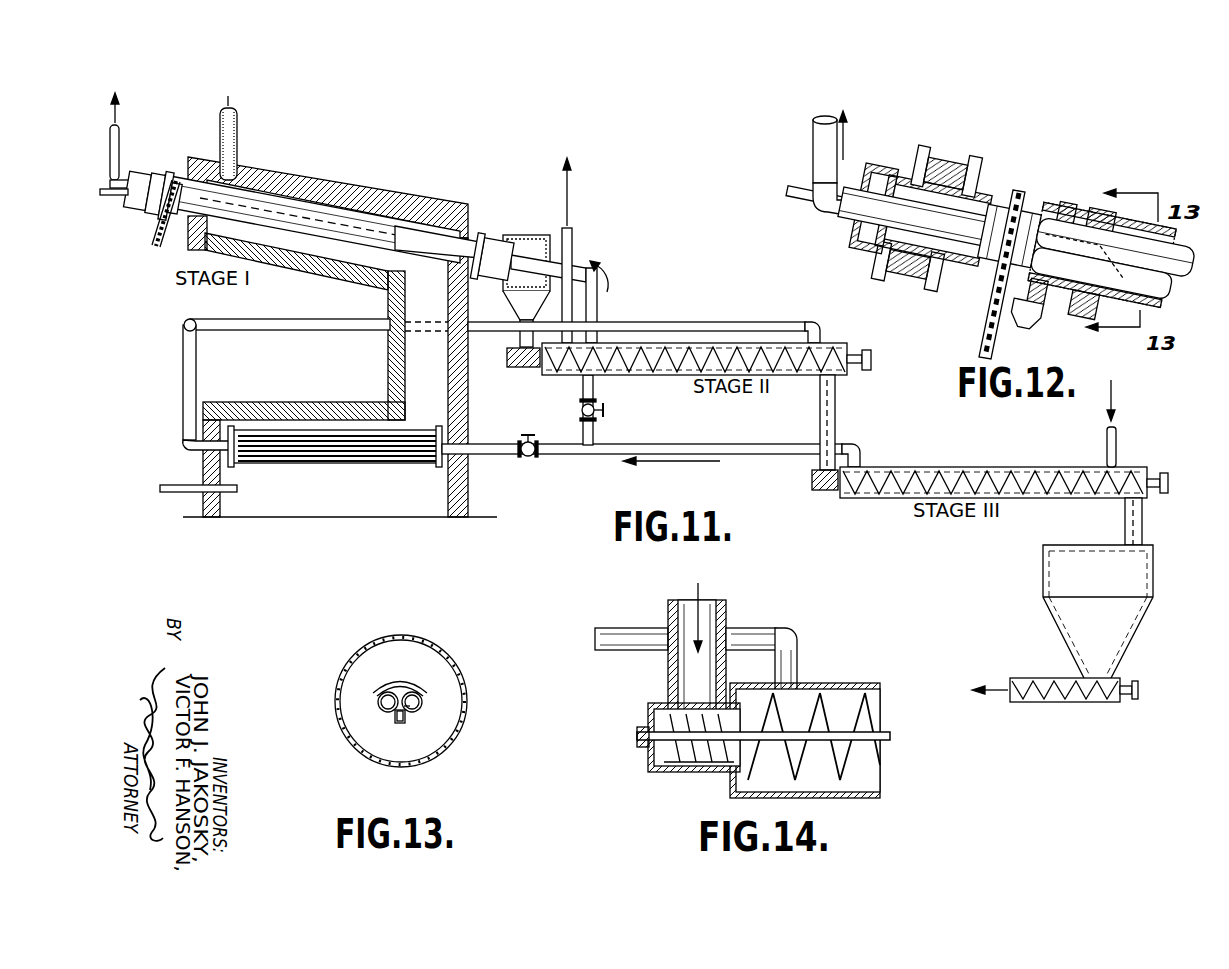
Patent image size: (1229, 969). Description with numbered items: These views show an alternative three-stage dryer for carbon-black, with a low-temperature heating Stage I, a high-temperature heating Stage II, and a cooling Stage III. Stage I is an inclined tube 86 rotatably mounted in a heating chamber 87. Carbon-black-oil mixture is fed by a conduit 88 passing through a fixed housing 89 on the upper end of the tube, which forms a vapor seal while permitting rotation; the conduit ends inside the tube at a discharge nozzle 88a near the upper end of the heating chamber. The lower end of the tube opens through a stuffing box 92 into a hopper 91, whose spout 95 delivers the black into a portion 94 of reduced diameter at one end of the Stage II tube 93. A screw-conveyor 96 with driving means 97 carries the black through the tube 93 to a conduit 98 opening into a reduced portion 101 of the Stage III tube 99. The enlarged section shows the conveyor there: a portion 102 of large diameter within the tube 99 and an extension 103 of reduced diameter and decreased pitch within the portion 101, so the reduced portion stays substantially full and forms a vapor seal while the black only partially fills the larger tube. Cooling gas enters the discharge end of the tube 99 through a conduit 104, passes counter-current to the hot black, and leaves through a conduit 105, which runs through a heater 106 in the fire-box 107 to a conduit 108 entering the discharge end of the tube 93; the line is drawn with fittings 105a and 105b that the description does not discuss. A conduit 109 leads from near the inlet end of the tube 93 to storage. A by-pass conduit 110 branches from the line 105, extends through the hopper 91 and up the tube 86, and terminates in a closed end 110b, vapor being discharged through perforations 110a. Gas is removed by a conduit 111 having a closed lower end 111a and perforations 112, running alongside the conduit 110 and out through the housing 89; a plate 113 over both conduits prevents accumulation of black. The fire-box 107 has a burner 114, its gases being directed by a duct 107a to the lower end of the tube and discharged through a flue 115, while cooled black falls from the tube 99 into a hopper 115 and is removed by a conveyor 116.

In FIG. 11, the inclined tube 86 is at (355, 212).
In FIG. 12, the inclined tube 86 is at (980, 265).
In FIG. 13, the inclined tube 86 is at (455, 665).
In FIG. 11, the heating chamber 87 is at (328, 337).
In FIG. 11, the conduit 88 is at (106, 198).
In FIG. 12, the conduit 88 is at (796, 212).
In FIG. 11, the CBOM discharge nozzle 88a is at (218, 220).
In FIG. 12, the CBOM discharge nozzle 88a is at (1110, 290).
In FIG. 13, the CBOM discharge nozzle 88a is at (395, 724).
In FIG. 11, the fixed housing 89 is at (142, 176).
In FIG. 12, the fixed housing 89 is at (893, 170).
In FIG. 11, the hopper 91 is at (514, 235).
In FIG. 11, the stuffing box 92 is at (488, 286).
In FIG. 11, the tube 93 is at (680, 343).
In FIG. 11, the portion of reduced diameter 94 is at (530, 368).
In FIG. 11, the spout 95 is at (520, 338).
In FIG. 11, the screw-conveyor 96 is at (655, 377).
In FIG. 11, the driving means 97 is at (871, 354).
In FIG. 11, the conduit 98 is at (838, 425).
In FIG. 14, the conduit 98 is at (668, 677).
In FIG. 11, the tube 99 is at (948, 467).
In FIG. 14, the tube 99 is at (878, 700).
In FIG. 11, the reduced portion 101 is at (818, 492).
In FIG. 14, the reduced portion 101 is at (700, 775).
In FIG. 14, the portion of large diameter 102 is at (860, 762).
In FIG. 14, the extension 103 is at (650, 755).
In FIG. 11, the conduit 104 is at (1107, 447).
In FIG. 14, the conduit 105 is at (772, 632).
In FIG. 11, the valve 105a is at (530, 438).
In FIG. 11, the valve 105b is at (604, 412).
In FIG. 11, the heater 106 is at (400, 462).
In FIG. 11, the fire-box 107 is at (304, 462).
In FIG. 11, the duct 107a is at (416, 345).
In FIG. 11, the conduit 108 is at (183, 380).
In FIG. 11, the conduit 109 is at (561, 302).
In FIG. 11, the by-pass conduit 110 is at (596, 293).
In FIG. 12, the by-pass conduit 110 is at (1192, 262).
In FIG. 13, the by-pass conduit 110 is at (422, 702).
In FIG. 12, the perforations 110a is at (1172, 283).
In FIG. 13, the perforations 110a is at (414, 712).
In FIG. 12, the closed end 110b is at (1050, 215).
In FIG. 11, the conduit 111 is at (120, 150).
In FIG. 12, the conduit 111 is at (1055, 318).
In FIG. 13, the conduit 111 is at (378, 702).
In FIG. 11, the closed lower end 111a is at (485, 246).
In FIG. 12, the perforations 112 is at (1045, 270).
In FIG. 13, the perforations 112 is at (393, 712).
In FIG. 12, the plate 113 is at (1112, 238).
In FIG. 13, the plate 113 is at (400, 686).
In FIG. 11, the burner 114 is at (233, 486).
In FIG. 11, the flue 115 is at (237, 140).
In FIG. 11, the conveyor 116 is at (1050, 702).